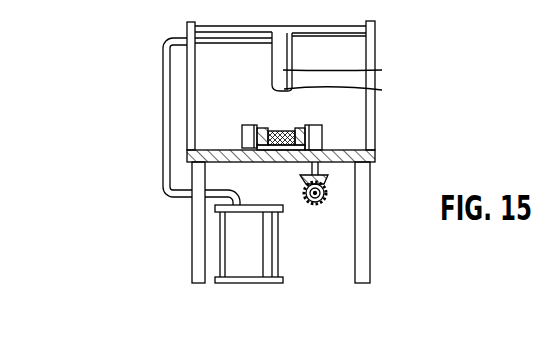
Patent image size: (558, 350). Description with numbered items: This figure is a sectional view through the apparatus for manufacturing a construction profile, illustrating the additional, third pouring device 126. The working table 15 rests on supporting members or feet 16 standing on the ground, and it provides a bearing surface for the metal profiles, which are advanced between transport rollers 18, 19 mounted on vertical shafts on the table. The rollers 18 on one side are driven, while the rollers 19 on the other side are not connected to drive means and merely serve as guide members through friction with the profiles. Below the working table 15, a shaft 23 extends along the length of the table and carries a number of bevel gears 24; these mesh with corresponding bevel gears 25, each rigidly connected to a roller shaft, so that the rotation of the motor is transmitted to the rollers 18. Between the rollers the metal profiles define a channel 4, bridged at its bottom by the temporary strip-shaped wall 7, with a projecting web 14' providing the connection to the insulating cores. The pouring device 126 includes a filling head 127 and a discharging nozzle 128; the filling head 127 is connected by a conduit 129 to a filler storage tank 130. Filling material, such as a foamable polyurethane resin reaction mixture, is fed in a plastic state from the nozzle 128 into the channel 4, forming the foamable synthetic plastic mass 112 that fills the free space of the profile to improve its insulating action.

The channel 4 is at (282, 126).
The temporary strip-shaped wall 7 is at (265, 162).
The projecting web 14' is at (304, 119).
The working table 15 is at (357, 158).
The supporting members 16 is at (196, 237).
The transport roller 18 is at (322, 139).
The transport roller 19 is at (240, 136).
The shaft 23 is at (304, 192).
The bevel gear 24 is at (321, 204).
The bevel gear 25 is at (329, 180).
The foamable synthetic plastic mass 112 is at (275, 129).
The third pouring device 126 is at (294, 43).
The filling head 127 is at (347, 74).
The discharging nozzle 128 is at (348, 99).
The conduit 129 is at (252, 45).
The filler storage tank 130 is at (263, 248).